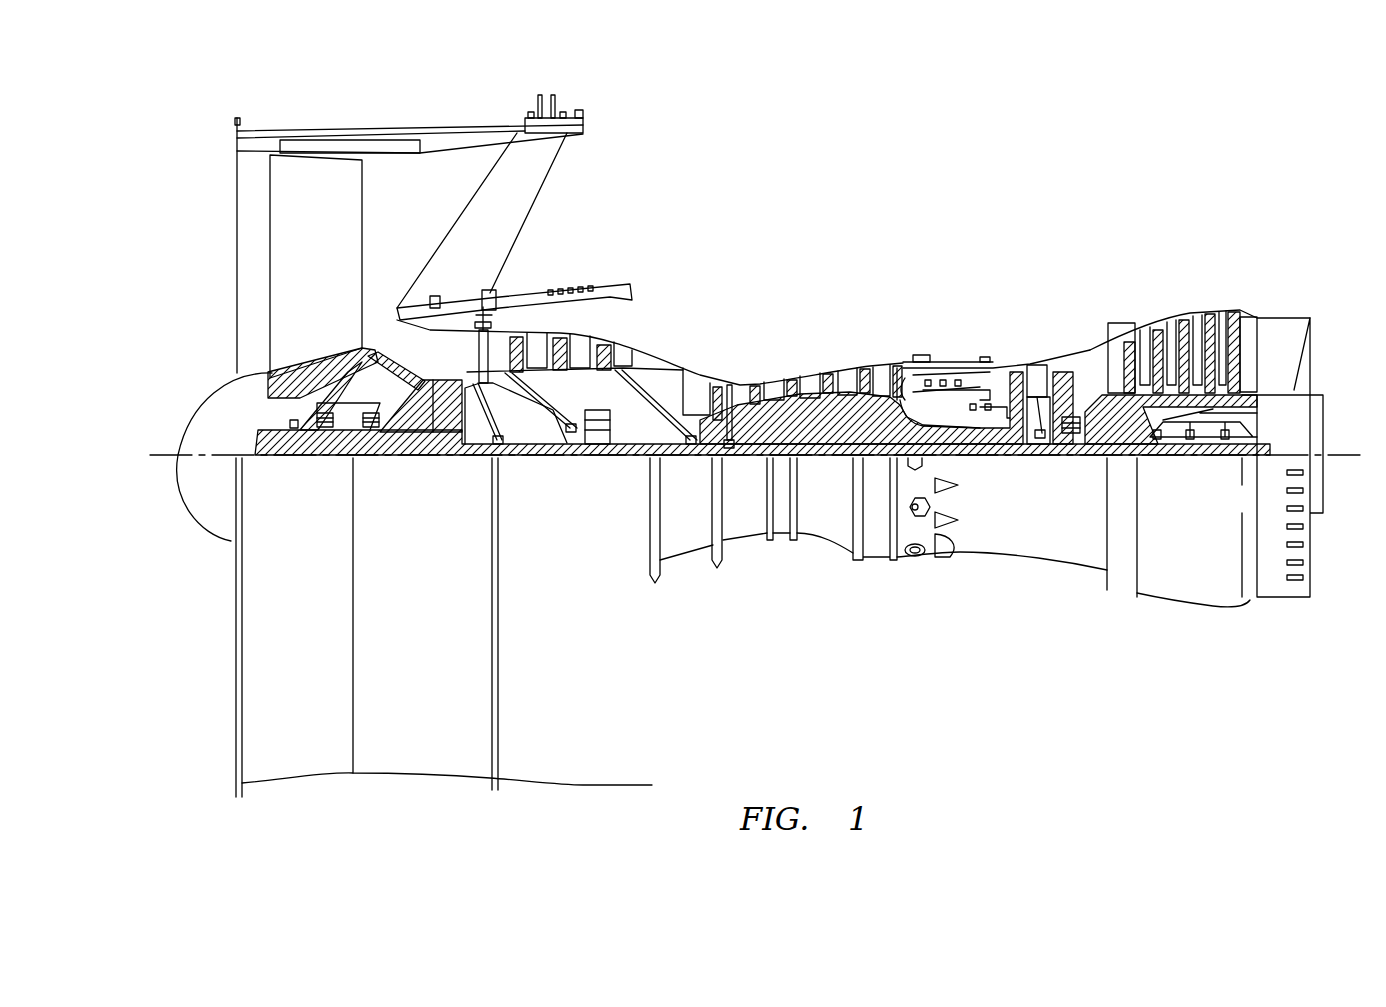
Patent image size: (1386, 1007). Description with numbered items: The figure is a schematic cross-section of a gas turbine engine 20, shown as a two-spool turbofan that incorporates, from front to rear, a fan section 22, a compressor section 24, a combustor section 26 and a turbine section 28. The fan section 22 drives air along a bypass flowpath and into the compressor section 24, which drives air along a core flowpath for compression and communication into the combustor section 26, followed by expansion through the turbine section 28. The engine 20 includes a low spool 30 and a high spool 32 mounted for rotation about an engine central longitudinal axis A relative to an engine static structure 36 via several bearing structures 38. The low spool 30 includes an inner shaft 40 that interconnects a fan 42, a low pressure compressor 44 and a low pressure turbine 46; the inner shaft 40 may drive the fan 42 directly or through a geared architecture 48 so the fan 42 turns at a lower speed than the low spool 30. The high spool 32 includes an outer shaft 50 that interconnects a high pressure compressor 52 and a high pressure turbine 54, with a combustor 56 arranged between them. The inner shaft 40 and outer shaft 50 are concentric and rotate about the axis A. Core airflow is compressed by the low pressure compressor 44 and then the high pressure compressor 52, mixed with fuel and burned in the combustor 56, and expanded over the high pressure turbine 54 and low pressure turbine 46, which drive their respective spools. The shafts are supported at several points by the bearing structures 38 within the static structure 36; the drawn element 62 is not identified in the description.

The gas turbine engine 20 is at (1078, 172).
The fan section 22 is at (490, 108).
The compressor section 24 is at (500, 247).
The combustor section 26 is at (1010, 247).
The turbine section 28 is at (1250, 247).
The low spool 30 is at (830, 458).
The high spool 32 is at (873, 393).
The engine static structure 36 is at (880, 558).
The bearing structures 38 is at (1100, 322).
The inner shaft 40 is at (676, 462).
The fan 42 is at (333, 287).
The low pressure compressor 44 is at (573, 343).
The low pressure turbine 46 is at (1168, 345).
The geared architecture 48 is at (447, 440).
The outer shaft 50 is at (950, 433).
The high pressure compressor 52 is at (813, 417).
The high pressure turbine 54 is at (1037, 363).
The combustor 56 is at (960, 393).
The mid-turbine frame 62 is at (738, 460).
The engine central longitudinal axis A is at (1345, 447).